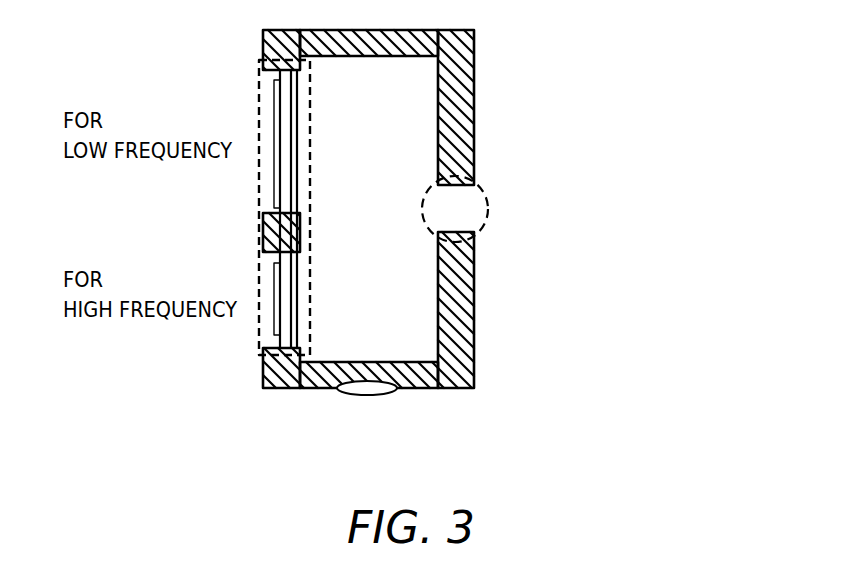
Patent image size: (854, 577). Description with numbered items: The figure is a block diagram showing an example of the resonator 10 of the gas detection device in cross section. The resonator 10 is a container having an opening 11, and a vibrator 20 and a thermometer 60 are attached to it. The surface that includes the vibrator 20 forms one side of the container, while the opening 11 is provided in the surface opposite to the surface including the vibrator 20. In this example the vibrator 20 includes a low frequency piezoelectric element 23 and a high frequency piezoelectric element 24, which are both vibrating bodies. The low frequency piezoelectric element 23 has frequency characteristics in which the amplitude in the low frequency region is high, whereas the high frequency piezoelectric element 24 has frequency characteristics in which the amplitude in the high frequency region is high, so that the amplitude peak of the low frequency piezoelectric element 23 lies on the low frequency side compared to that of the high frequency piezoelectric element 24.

The resonator 10 is at (475, 72).
The opening 11 is at (475, 237).
The vibrator 20 is at (310, 142).
The low frequency piezoelectric element 23 is at (273, 177).
The high frequency piezoelectric element 24 is at (274, 324).
The thermometer 60 is at (385, 395).